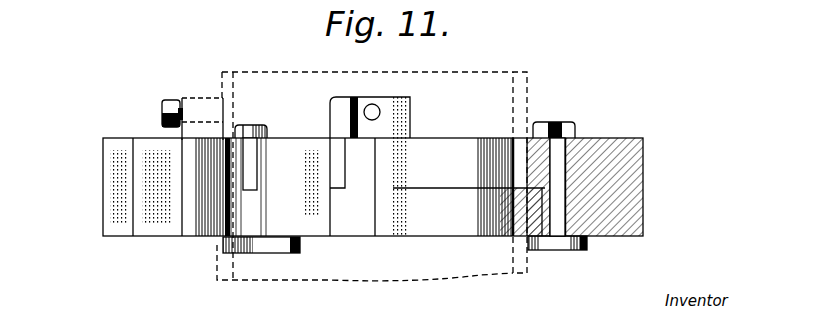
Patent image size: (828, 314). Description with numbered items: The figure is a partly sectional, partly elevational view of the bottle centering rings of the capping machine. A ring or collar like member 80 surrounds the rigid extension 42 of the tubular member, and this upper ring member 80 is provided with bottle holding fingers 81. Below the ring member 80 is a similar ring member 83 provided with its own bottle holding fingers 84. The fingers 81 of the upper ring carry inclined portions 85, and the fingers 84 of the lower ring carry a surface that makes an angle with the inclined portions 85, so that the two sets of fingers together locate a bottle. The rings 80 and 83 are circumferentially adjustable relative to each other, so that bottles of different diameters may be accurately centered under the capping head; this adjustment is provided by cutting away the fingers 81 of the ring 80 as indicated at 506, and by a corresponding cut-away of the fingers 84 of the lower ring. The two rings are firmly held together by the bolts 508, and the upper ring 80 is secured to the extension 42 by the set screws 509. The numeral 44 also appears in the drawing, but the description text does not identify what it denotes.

The rigid extension 42 is at (219, 280).
The casing 44 is at (528, 88).
The ring or collar like member 80 is at (439, 152).
The bottle holding fingers 81 is at (613, 178).
The ring member 83 is at (253, 253).
The bottle holding fingers 84 is at (281, 138).
The inclined portions 85 is at (345, 160).
The cut away 506 is at (543, 197).
The bolts 508 is at (567, 155).
The set screws 509 is at (167, 102).